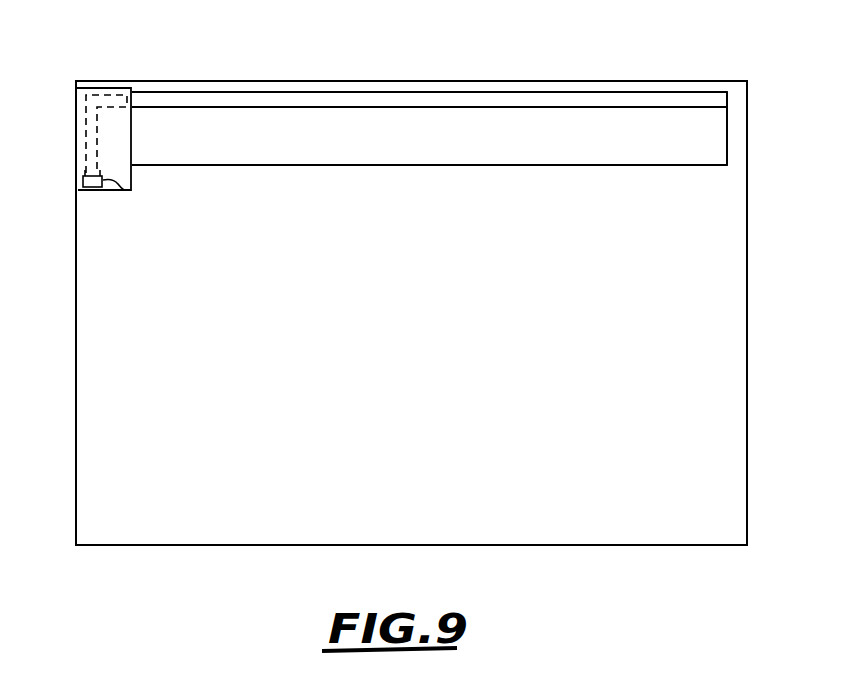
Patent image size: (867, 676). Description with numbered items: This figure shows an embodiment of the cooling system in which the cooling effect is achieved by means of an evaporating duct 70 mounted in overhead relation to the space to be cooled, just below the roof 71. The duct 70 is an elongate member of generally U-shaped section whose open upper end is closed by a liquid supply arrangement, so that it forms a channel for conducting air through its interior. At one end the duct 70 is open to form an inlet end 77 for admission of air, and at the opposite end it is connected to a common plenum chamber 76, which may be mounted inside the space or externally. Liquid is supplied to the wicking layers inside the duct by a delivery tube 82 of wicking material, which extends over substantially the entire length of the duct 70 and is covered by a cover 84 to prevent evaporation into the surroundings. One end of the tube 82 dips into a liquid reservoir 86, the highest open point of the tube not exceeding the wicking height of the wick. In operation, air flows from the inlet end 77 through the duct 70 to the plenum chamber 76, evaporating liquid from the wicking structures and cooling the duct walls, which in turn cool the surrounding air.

The evaporating duct 70 is at (536, 143).
The roof 71 is at (599, 78).
The plenum chamber 76 is at (75, 146).
The inlet end 77 is at (725, 138).
The delivery tube 82 is at (110, 97).
The cover 84 is at (672, 98).
The liquid reservoir 86 is at (124, 190).